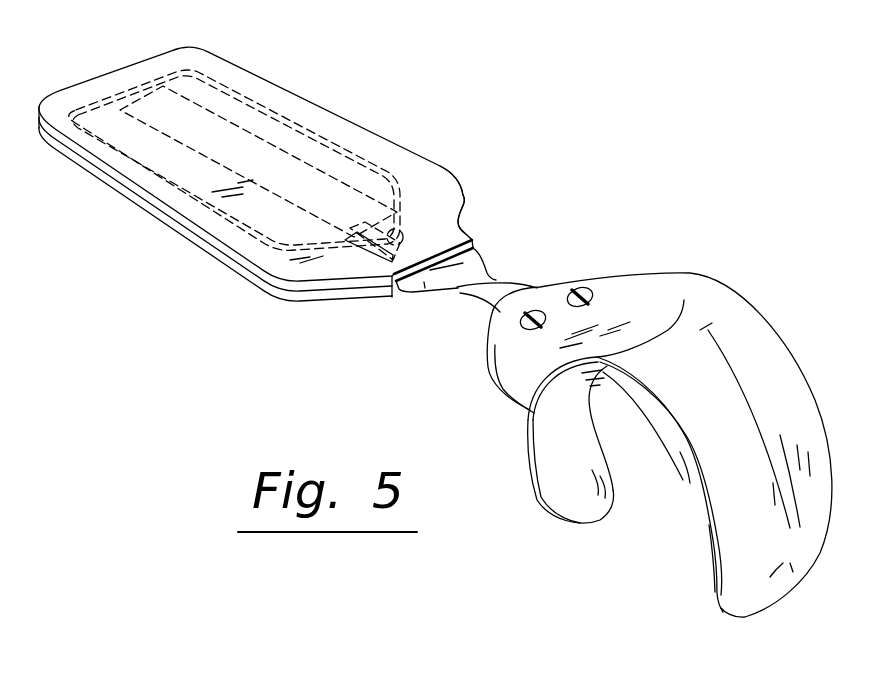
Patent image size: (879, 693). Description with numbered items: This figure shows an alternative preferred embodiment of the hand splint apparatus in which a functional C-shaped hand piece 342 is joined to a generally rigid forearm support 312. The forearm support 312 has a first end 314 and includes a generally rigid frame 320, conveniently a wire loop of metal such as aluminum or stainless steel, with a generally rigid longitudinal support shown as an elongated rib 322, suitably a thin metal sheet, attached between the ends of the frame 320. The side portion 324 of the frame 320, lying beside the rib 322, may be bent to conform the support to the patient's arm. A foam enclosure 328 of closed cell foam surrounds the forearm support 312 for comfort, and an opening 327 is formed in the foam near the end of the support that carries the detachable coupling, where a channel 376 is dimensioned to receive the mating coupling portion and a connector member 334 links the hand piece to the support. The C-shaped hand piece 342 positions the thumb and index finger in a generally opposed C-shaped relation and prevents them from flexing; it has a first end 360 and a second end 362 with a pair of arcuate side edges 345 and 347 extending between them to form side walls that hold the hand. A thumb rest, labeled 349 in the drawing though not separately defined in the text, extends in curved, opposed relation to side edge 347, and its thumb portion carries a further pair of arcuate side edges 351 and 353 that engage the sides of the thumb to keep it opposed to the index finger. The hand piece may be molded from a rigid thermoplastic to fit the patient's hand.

The forearm support 312 is at (163, 228).
The first end 314 is at (122, 68).
The frame 320 is at (343, 140).
The elongated rib 322 is at (247, 123).
The side portion 324 is at (440, 239).
The opening 327 is at (465, 267).
The foam enclosure 328 is at (453, 174).
The connector member 334 is at (468, 293).
The functional C-shaped hand piece 342 is at (688, 277).
The arcuate side edge 345 is at (793, 357).
The arcuate side edge 347 is at (710, 525).
The retaining clip 349 is at (590, 476).
The arcuate side edge 351 is at (552, 507).
The arcuate side edge 353 is at (590, 430).
The first end 360 is at (537, 292).
The second end 362 is at (767, 613).
The channel 376 is at (387, 295).